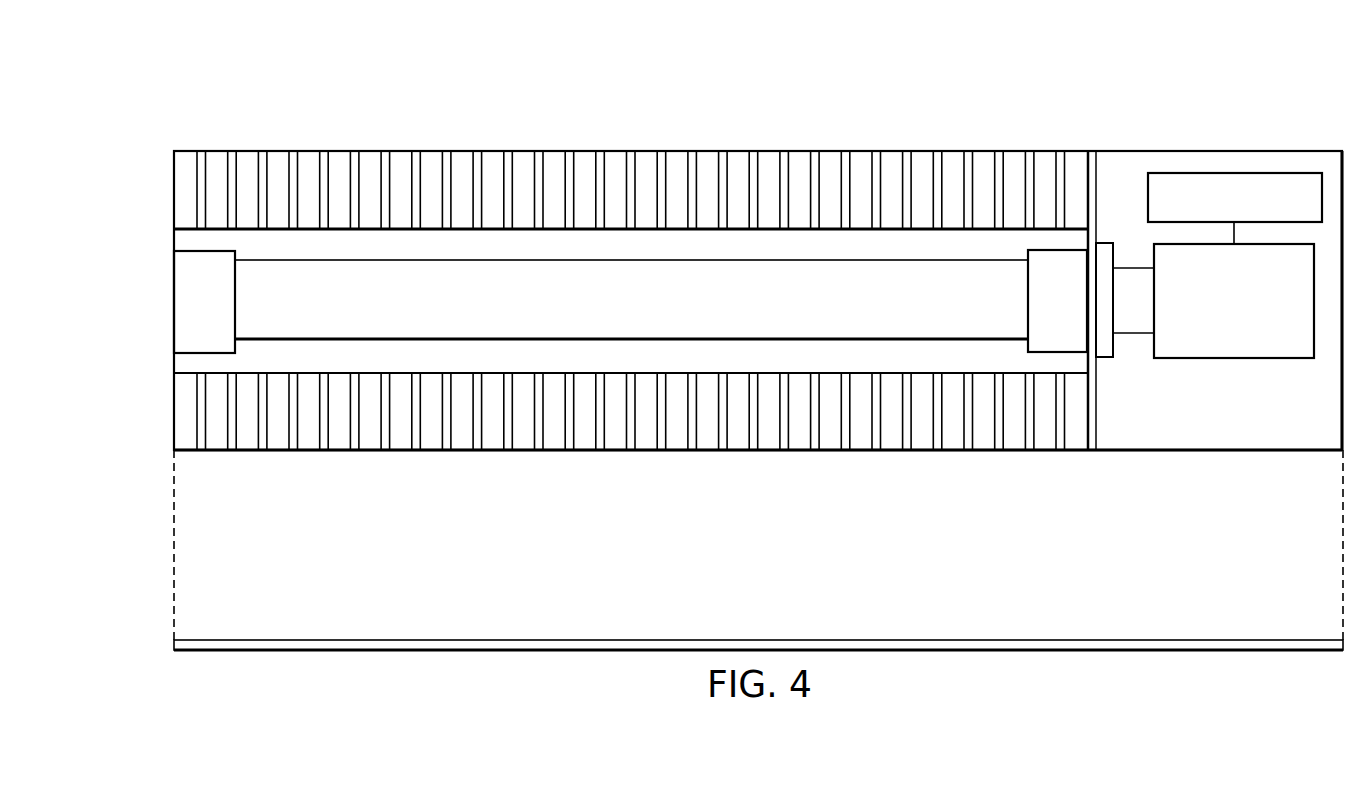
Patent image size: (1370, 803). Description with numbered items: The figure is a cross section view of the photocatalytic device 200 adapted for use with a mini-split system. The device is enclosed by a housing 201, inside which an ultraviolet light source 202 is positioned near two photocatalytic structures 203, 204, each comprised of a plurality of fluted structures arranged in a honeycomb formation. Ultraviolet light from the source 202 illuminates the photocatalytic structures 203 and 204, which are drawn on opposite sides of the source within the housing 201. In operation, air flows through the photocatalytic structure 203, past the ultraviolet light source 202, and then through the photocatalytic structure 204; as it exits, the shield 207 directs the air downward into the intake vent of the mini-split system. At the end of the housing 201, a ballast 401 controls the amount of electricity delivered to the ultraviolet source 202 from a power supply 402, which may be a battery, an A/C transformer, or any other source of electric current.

The photocatalytic device 200 is at (722, 349).
The housing 201 is at (1209, 217).
The ultraviolet light source 202 is at (654, 318).
The photocatalytic structure 203 is at (179, 188).
The photocatalytic structure 204 is at (180, 412).
The shield 207 is at (193, 601).
The ballast 401 is at (1256, 314).
The power supply 402 is at (1256, 212).